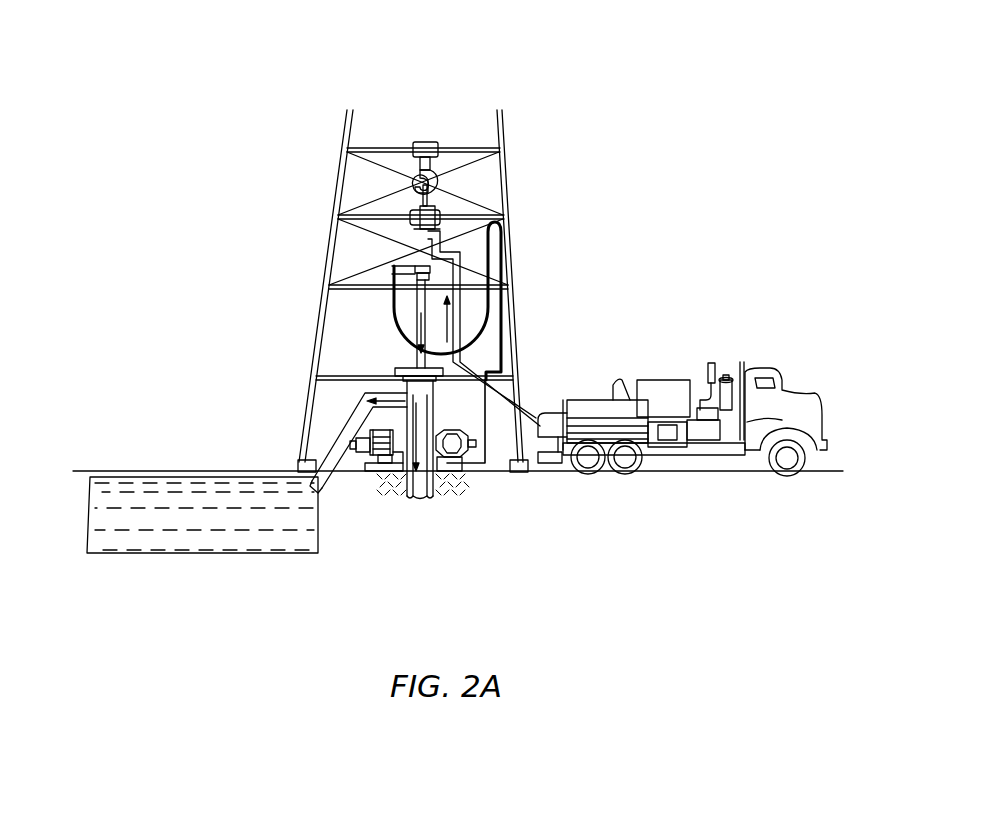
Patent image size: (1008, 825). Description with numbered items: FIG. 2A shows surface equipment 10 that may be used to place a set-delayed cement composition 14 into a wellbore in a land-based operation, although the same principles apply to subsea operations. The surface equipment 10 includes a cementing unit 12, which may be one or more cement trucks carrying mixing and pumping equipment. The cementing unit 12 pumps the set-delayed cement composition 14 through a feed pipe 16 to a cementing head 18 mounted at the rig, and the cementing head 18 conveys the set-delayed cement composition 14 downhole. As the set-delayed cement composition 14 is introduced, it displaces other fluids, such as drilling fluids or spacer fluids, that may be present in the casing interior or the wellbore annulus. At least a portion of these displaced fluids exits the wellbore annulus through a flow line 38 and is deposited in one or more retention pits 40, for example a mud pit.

The surface equipment 10 is at (720, 153).
The cementing unit 12 is at (728, 458).
The set-delayed cement composition 14 is at (387, 317).
The feed pipe 16 is at (524, 398).
The cementing head 18 is at (455, 208).
The flow line 38 is at (343, 457).
The retention pit 40 is at (131, 554).